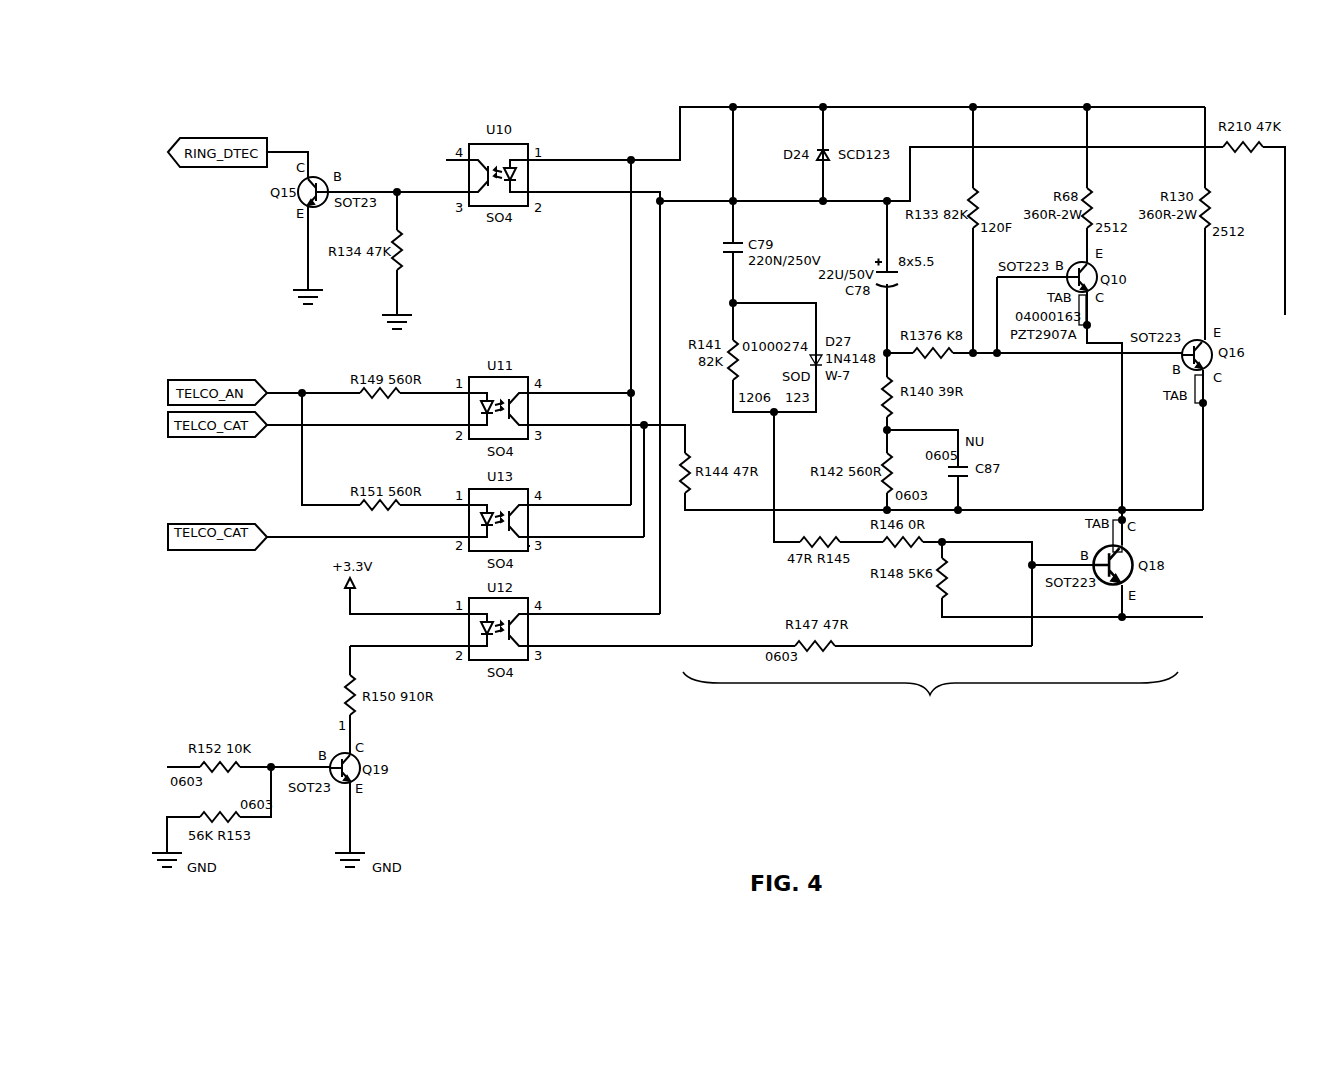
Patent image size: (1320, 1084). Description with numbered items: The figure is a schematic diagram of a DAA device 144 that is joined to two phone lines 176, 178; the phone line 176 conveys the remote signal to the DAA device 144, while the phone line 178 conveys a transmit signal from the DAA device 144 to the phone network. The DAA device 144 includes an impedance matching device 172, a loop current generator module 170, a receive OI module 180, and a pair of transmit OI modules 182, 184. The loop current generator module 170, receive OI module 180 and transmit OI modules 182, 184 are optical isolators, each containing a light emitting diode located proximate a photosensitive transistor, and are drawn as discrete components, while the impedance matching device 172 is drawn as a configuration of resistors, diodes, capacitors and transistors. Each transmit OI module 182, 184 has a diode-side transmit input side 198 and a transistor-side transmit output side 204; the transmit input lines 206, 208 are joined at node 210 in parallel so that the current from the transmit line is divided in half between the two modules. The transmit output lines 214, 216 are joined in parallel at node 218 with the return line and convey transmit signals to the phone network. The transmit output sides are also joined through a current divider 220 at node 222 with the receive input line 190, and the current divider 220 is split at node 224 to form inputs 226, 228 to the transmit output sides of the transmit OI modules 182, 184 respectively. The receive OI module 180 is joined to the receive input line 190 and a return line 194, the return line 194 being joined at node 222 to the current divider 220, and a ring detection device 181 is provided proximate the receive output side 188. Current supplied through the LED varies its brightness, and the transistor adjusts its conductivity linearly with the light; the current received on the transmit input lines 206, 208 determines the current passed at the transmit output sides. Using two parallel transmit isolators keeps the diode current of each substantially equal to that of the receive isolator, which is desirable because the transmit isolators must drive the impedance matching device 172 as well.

The DAA device 144 is at (230, 88).
The ring detection device 181 is at (305, 135).
The receive OI module 180 is at (496, 106).
The receive output side 188 is at (457, 180).
The node 222 is at (630, 158).
The receive input line 190 is at (648, 166).
The return line 194 is at (560, 198).
The current divider 220 is at (629, 290).
The input 226 is at (553, 390).
The node 224 is at (627, 391).
The node 218 is at (647, 420).
The transmit OI module 182 is at (485, 352).
The transmit OI module 184 is at (478, 477).
The transmit input side 198 is at (436, 374).
The transmit input line 206 is at (318, 391).
The node 210 is at (301, 390).
The transmit input line 208 is at (309, 503).
The input 228 is at (547, 503).
The transmit output line 214 is at (622, 428).
The transmit output side 204 is at (553, 522).
The transmit output line 216 is at (560, 548).
The loop current generator module 170 is at (346, 630).
The phone line 176 is at (1285, 165).
The phone line 178 is at (1163, 622).
The impedance matching device 172 is at (930, 701).